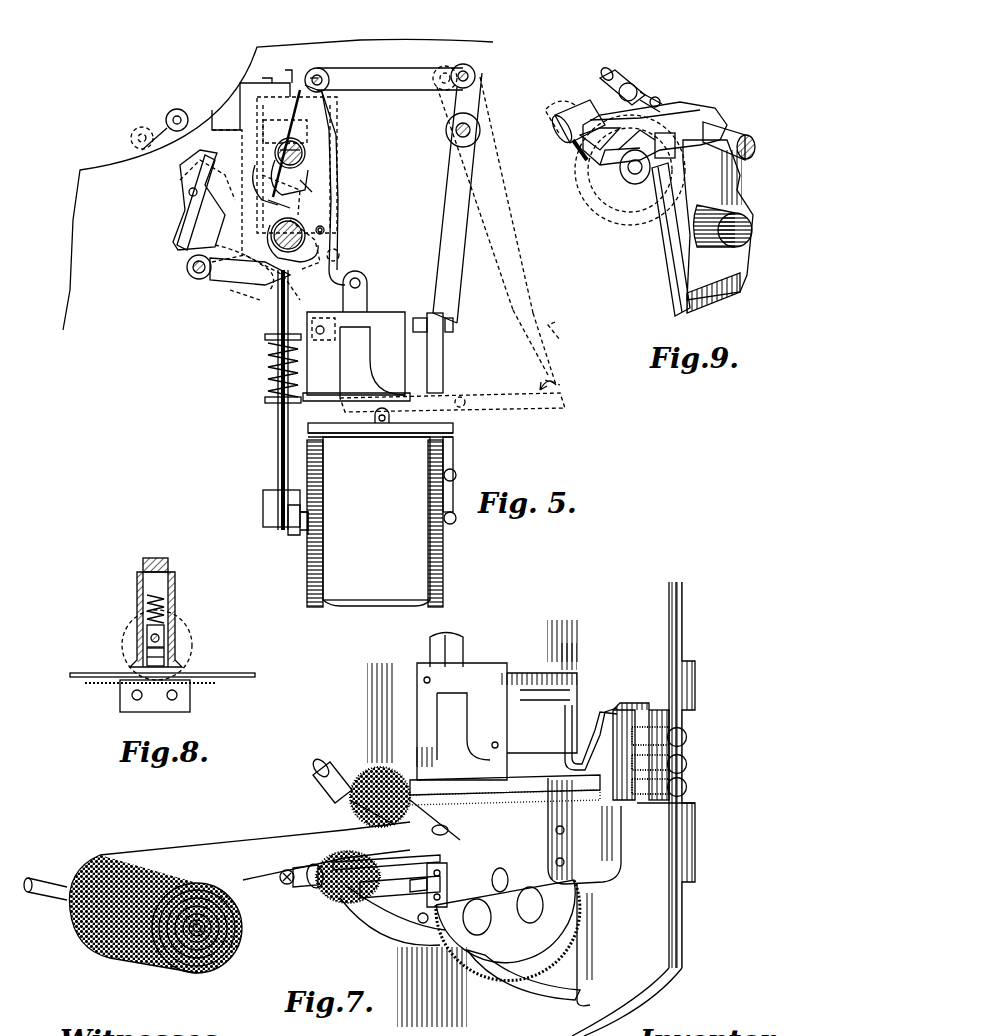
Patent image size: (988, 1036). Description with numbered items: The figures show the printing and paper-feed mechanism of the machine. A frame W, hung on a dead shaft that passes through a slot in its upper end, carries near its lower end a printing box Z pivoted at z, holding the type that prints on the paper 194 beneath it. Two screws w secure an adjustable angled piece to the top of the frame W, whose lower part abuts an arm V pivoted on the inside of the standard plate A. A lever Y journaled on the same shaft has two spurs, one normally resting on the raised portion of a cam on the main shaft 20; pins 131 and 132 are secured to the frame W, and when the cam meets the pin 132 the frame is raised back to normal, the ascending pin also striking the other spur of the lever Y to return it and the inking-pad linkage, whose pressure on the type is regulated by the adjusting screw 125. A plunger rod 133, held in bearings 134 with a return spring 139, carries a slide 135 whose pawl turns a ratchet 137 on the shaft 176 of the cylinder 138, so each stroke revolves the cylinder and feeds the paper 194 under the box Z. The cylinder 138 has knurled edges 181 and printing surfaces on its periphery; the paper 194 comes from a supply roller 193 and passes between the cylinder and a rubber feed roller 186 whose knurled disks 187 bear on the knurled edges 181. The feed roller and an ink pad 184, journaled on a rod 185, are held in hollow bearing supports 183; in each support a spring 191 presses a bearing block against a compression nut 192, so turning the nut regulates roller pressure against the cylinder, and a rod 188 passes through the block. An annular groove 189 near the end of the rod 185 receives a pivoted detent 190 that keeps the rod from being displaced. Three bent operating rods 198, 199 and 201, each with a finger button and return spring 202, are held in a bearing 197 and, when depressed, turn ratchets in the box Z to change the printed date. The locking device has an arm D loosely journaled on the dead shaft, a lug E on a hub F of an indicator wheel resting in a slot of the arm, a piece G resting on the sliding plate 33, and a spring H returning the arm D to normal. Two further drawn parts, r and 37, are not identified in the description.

In FIG. 5, the standard plate A is at (92, 213).
In FIG. 5, the frame W is at (333, 115).
In FIG. 5, the screws w is at (266, 78).
In FIG. 5, the lever Y is at (305, 210).
In FIG. 5, the pin 131 is at (325, 232).
In FIG. 5, the main shaft 20 is at (320, 247).
In FIG. 9, the main shaft 20 is at (742, 228).
In FIG. 5, the pivot z is at (350, 257).
In FIG. 5, the arm V is at (190, 225).
In FIG. 5, the crank r is at (190, 270).
In FIG. 5, the pin 132 is at (268, 196).
In FIG. 5, the plunger-rod 133 is at (268, 336).
In FIG. 5, the return spring 139 is at (268, 362).
In FIG. 5, the bearings 134 is at (268, 398).
In FIG. 5, the slide 135 is at (268, 500).
In FIG. 5, the ratchet 137 is at (288, 528).
In FIG. 5, the printing box Z is at (380, 322).
In FIG. 7, the printing box Z is at (440, 685).
In FIG. 5, the adjusting screw 125 is at (455, 327).
In FIG. 5, the cylinder 138 is at (381, 507).
In FIG. 8, the cylinder 138 is at (118, 700).
In FIG. 7, the cylinder 138 is at (397, 917).
In FIG. 5, the shaft 176 is at (300, 530).
In FIG. 7, the shaft 176 is at (620, 896).
In FIG. 5, the knurled edges 181 is at (425, 603).
In FIG. 8, the knurled edges 181 is at (115, 683).
In FIG. 7, the knurled edges 181 is at (347, 917).
In FIG. 9, the spring H is at (607, 120).
In FIG. 9, the arm D is at (700, 110).
In FIG. 9, the lug E is at (617, 163).
In FIG. 9, the piece G is at (652, 158).
In FIG. 9, the hub F is at (638, 170).
In FIG. 9, the plate 37 is at (727, 194).
In FIG. 9, the sliding-plate 33 is at (687, 254).
In FIG. 8, the compression nut 192 is at (157, 560).
In FIG. 8, the bearing supports 183 is at (137, 595).
In FIG. 7, the bearing supports 183 is at (325, 786).
In FIG. 8, the spring 191 is at (170, 613).
In FIG. 8, the rod 188 is at (150, 636).
In FIG. 7, the rod 188 is at (452, 788).
In FIG. 8, the knurled disks 187 is at (135, 640).
In FIG. 7, the knurled disks 187 is at (345, 802).
In FIG. 8, the paper 194 is at (242, 675).
In FIG. 7, the paper 194 is at (194, 855).
In FIG. 7, the supply-roller 193 is at (205, 932).
In FIG. 7, the bearing 197 is at (628, 712).
In FIG. 7, the return spring 202 is at (686, 728).
In FIG. 7, the operating rod 198 is at (688, 736).
In FIG. 7, the operating rod 199 is at (688, 763).
In FIG. 7, the operating rod 201 is at (688, 786).
In FIG. 7, the feed roller 186 is at (370, 793).
In FIG. 7, the ink pad 184 is at (310, 895).
In FIG. 7, the annular groove 189 is at (395, 968).
In FIG. 7, the detent 190 is at (453, 865).
In FIG. 7, the rod 185 is at (435, 887).